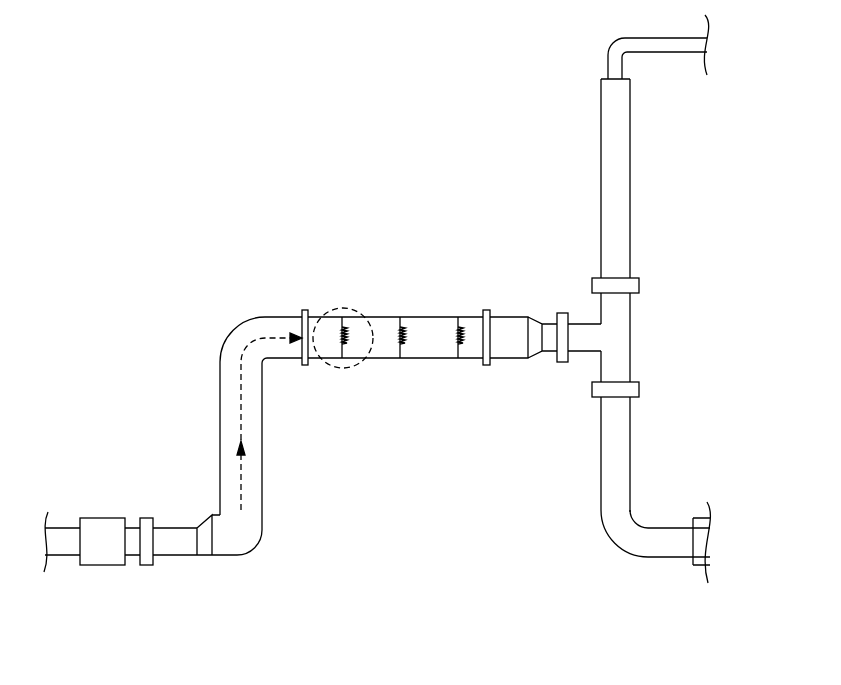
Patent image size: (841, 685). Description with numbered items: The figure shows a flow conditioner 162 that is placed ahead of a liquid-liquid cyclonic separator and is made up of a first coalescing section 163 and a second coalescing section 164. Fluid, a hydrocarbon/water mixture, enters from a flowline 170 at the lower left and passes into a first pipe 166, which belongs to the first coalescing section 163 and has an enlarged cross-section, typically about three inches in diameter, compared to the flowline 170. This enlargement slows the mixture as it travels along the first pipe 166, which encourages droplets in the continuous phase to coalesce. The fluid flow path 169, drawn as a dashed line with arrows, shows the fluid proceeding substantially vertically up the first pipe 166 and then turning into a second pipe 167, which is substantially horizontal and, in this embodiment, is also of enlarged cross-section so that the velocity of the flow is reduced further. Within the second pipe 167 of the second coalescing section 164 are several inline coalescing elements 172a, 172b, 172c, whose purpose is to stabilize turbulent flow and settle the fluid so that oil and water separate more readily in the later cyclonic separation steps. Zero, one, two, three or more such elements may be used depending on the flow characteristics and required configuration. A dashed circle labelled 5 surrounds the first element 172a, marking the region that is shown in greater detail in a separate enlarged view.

The flow conditioner 162 is at (200, 190).
The first coalescing section 163 is at (182, 416).
The second coalescing section 164 is at (418, 283).
The first pipe 166 is at (262, 462).
The second pipe 167 is at (505, 315).
The fluid flow path 169 is at (240, 495).
The flowline 170 is at (62, 527).
The inline coalescing element 172a is at (345, 356).
The inline coalescing element 172b is at (400, 358).
The inline coalescing element 172c is at (458, 358).
The detail region of FIG. 5 is at (343, 306).